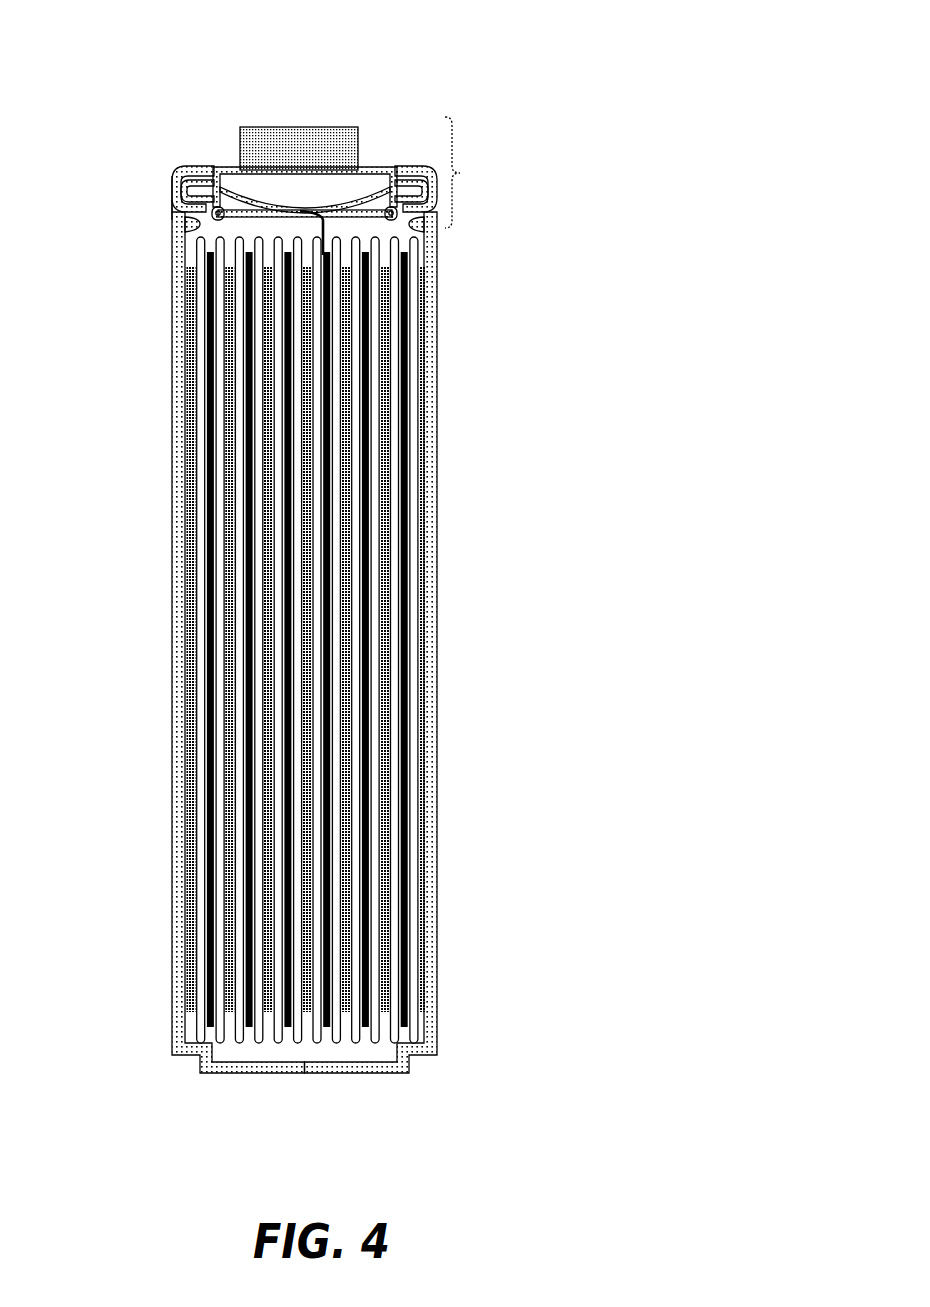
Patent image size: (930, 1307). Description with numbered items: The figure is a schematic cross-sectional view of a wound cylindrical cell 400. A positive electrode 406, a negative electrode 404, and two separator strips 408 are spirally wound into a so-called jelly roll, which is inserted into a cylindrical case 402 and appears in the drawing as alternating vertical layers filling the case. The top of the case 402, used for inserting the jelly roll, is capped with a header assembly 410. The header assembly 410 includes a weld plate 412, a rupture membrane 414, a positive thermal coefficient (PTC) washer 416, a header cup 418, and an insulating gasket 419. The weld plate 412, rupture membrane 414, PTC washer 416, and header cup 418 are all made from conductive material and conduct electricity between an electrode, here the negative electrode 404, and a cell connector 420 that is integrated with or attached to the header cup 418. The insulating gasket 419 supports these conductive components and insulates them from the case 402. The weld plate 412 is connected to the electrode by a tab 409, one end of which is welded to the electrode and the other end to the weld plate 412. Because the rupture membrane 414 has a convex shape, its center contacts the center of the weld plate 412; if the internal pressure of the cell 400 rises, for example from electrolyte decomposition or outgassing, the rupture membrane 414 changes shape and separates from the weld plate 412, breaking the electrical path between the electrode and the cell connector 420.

The wound cylindrical cell 400 is at (626, 104).
The cylindrical case 402 is at (437, 635).
The negative electrode 404 is at (407, 520).
The positive electrode 406 is at (437, 432).
The separator strips 408 is at (412, 368).
The tab 409 is at (325, 222).
The header assembly 410 is at (483, 172).
The weld plate 412 is at (417, 165).
The rupture membrane 414 is at (213, 170).
The positive thermal coefficient (PTC) washer 416 is at (173, 183).
The header cup 418 is at (217, 168).
The insulating gasket 419 is at (173, 205).
The cell connector 420 is at (259, 128).